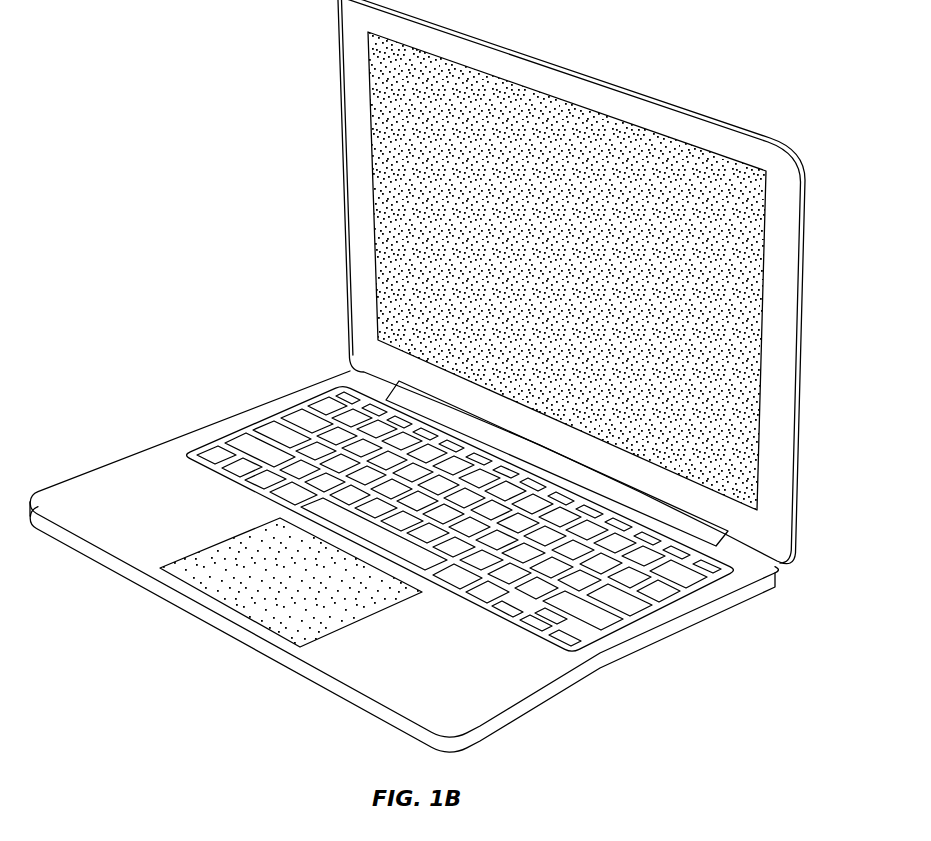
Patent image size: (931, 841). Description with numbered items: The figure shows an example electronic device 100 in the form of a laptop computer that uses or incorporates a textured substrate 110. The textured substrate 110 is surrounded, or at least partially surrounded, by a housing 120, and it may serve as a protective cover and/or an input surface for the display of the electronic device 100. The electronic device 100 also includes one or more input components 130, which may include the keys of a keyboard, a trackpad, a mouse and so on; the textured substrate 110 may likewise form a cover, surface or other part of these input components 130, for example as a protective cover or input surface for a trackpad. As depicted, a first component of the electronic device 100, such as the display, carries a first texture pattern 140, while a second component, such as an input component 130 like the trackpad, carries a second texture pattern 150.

The electronic device 100 is at (192, 122).
The textured substrate 110 is at (763, 263).
The housing 120 is at (802, 342).
The input components 130 is at (248, 622).
The first texture pattern 140 is at (402, 197).
The second texture pattern 150 is at (229, 583).